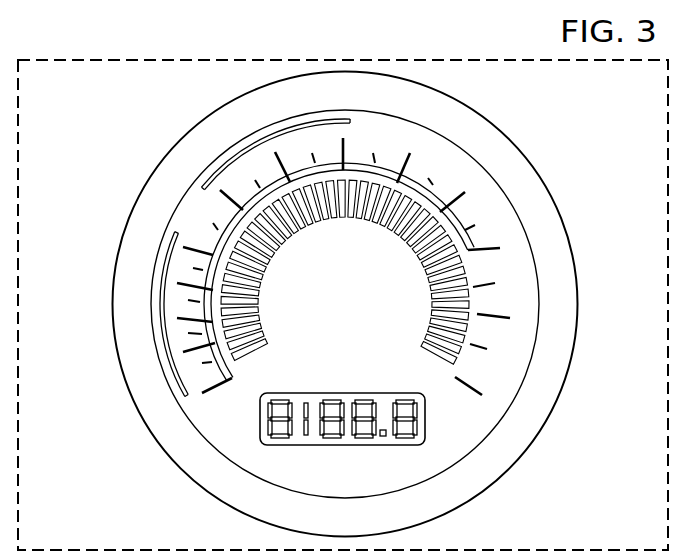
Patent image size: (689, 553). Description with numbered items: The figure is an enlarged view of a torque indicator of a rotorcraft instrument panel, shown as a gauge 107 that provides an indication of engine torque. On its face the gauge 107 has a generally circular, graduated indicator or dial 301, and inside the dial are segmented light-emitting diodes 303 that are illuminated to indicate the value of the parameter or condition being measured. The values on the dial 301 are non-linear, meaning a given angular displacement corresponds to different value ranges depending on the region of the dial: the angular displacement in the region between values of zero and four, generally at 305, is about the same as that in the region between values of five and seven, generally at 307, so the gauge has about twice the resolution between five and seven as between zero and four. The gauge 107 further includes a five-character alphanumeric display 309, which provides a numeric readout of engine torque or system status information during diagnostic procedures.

The gauge 107 is at (160, 148).
The graduated indicator or dial 301 is at (437, 192).
The segmented light-emitting diodes 303 is at (457, 303).
The region between values of 0 and 4 305 is at (161, 324).
The region between values of 5 and 7 307 is at (253, 143).
The five-character alphanumeric display 309 is at (343, 447).